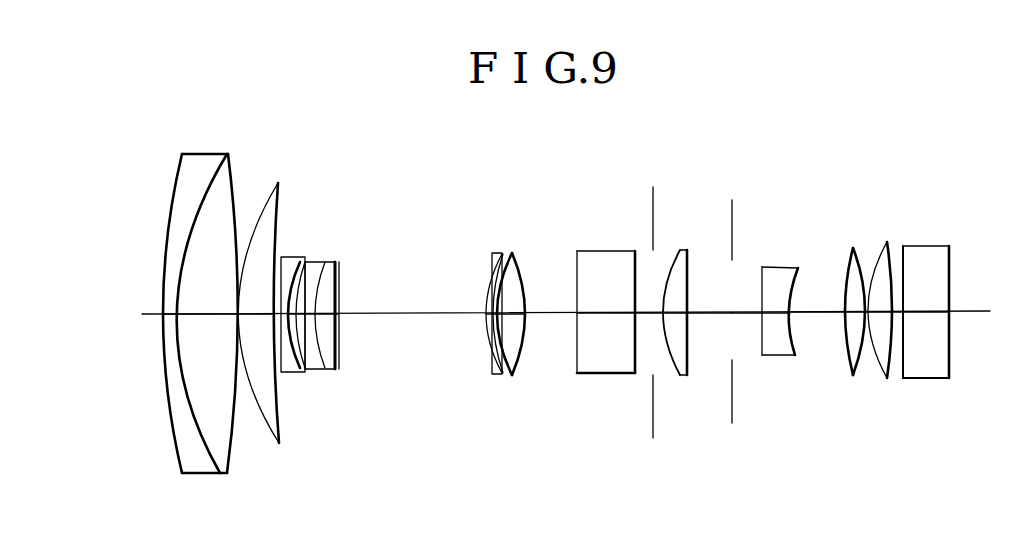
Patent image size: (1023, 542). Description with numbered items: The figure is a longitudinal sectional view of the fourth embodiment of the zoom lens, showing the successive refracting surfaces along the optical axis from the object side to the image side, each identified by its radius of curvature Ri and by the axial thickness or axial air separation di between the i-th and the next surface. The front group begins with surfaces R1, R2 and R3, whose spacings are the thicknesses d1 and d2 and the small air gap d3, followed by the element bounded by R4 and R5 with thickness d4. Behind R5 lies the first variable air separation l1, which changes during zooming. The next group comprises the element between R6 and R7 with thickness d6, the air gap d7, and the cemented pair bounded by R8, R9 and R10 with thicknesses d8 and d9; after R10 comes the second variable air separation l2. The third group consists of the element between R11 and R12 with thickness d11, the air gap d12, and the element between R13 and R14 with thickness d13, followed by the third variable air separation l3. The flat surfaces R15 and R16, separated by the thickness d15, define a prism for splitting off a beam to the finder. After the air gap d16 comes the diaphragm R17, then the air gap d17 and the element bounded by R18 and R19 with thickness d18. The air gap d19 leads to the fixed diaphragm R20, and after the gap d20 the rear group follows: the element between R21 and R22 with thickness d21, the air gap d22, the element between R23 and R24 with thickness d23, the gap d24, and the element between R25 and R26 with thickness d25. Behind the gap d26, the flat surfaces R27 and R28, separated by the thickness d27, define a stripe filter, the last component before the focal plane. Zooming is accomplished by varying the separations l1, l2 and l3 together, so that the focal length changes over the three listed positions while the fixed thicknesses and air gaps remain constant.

The first lens surface R1 is at (176, 458).
The second lens surface R2 is at (212, 458).
The third lens surface R3 is at (230, 462).
The fourth lens surface R4 is at (271, 436).
The fifth lens surface R5 is at (282, 446).
The sixth lens surface R6 is at (290, 370).
The seventh lens surface R7 is at (303, 369).
The eighth lens surface R8 is at (322, 370).
The ninth lens surface R9 is at (336, 370).
The tenth lens surface R10 is at (340, 370).
The eleventh lens surface R11 is at (490, 368).
The twelfth lens surface R12 is at (500, 370).
The thirteenth lens surface R13 is at (509, 375).
The fourteenth lens surface R14 is at (514, 375).
The prism entrance surface R15 is at (580, 373).
The prism exit surface R16 is at (631, 373).
The diaphragm R17 is at (653, 440).
The eighteenth lens surface R18 is at (676, 373).
The nineteenth lens surface R19 is at (688, 376).
The fixed diaphragm R20 is at (732, 425).
The twenty-first lens surface R21 is at (765, 357).
The twenty-second lens surface R22 is at (796, 357).
The twenty-third lens surface R23 is at (851, 375).
The twenty-fourth lens surface R24 is at (856, 375).
The twenty-fifth lens surface R25 is at (885, 378).
The twenty-sixth lens surface R26 is at (890, 378).
The stripe filter front surface R27 is at (906, 378).
The stripe filter rear surface R28 is at (950, 378).
The axial thickness between first and second surfaces d1 is at (163, 313).
The axial thickness between second and third surfaces d2 is at (188, 313).
The axial air separation between third and fourth surfaces d3 is at (238, 285).
The axial thickness between fourth and fifth surfaces d4 is at (245, 313).
The axial thickness between sixth and seventh surfaces d6 is at (293, 313).
The axial air separation between seventh and eighth surfaces d7 is at (301, 313).
The axial thickness between eighth and ninth surfaces d8 is at (317, 313).
The axial thickness between ninth and tenth surfaces d9 is at (334, 313).
The axial thickness between eleventh and twelfth surfaces d11 is at (487, 313).
The axial air separation between twelfth and thirteenth surfaces d12 is at (494, 313).
The axial thickness between thirteenth and fourteenth surfaces d13 is at (509, 311).
The axial thickness of prism d15 is at (588, 313).
The axial air separation between prism and diaphragm d16 is at (645, 313).
The axial air separation between diaphragm and eighteenth surface d17 is at (658, 312).
The axial thickness between eighteenth and nineteenth surfaces d18 is at (687, 313).
The axial air separation between nineteenth surface and fixed diaphragm d19 is at (710, 313).
The axial air separation between fixed diaphragm and twenty-first surface d20 is at (738, 313).
The axial thickness between twenty-first and twenty-second surfaces d21 is at (769, 313).
The axial air separation between twenty-second and twenty-third surfaces d22 is at (804, 311).
The axial thickness between twenty-third and twenty-fourth surfaces d23 is at (854, 311).
The axial air separation between twenty-fourth and twenty-fifth surfaces d24 is at (867, 310).
The axial thickness between twenty-fifth and twenty-sixth surfaces d25 is at (880, 310).
The axial air separation between twenty-sixth surface and stripe filter d26 is at (899, 311).
The axial thickness of stripe filter d27 is at (928, 310).
The first variable axial air separation l1 is at (279, 258).
The second variable axial air separation l2 is at (423, 313).
The third variable axial air separation l3 is at (550, 313).